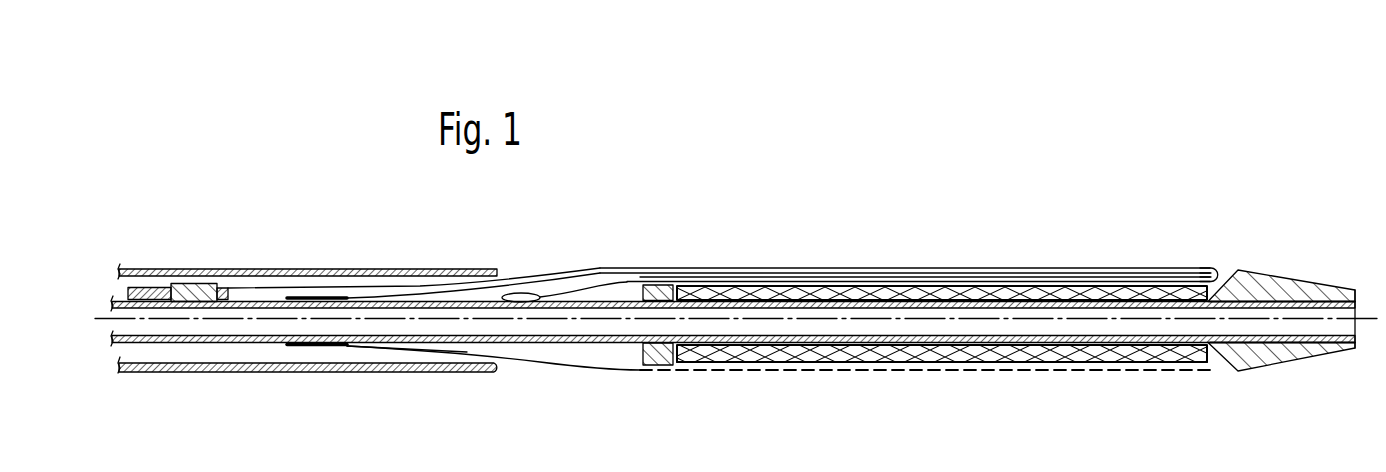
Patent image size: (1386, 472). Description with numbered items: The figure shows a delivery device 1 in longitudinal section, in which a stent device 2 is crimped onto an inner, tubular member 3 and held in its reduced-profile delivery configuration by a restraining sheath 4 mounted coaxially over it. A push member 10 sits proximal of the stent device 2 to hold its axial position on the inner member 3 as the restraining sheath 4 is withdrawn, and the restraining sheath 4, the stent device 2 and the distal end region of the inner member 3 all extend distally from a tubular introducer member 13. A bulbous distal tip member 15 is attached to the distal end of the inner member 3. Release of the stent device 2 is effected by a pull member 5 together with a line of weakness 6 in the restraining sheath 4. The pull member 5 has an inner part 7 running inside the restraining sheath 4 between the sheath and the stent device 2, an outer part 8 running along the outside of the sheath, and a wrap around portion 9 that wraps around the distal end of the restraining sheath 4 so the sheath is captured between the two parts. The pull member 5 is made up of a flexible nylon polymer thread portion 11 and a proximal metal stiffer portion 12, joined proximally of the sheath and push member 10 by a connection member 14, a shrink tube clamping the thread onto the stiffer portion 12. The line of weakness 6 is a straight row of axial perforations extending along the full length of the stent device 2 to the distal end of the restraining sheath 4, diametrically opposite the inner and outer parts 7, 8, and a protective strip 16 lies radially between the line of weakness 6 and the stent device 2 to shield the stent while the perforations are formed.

The delivery device 1 is at (990, 219).
The stent device 2 is at (790, 292).
The inner tubular member 3 is at (1281, 337).
The restraining sheath 4 is at (911, 267).
The pull member 5 is at (204, 308).
The line of weakness 6 is at (728, 371).
The inner part 7 is at (1115, 280).
The outer part 8 is at (1052, 267).
The wrap around portion 9 is at (1212, 268).
The push member 10 is at (655, 285).
The polymer thread portion 11 is at (523, 272).
The stiffer portion 12 is at (131, 287).
The tubular introducer member 13 is at (367, 270).
The connection member 14 is at (197, 286).
The distal tip member 15 is at (1280, 282).
The protective strip 16 is at (933, 363).